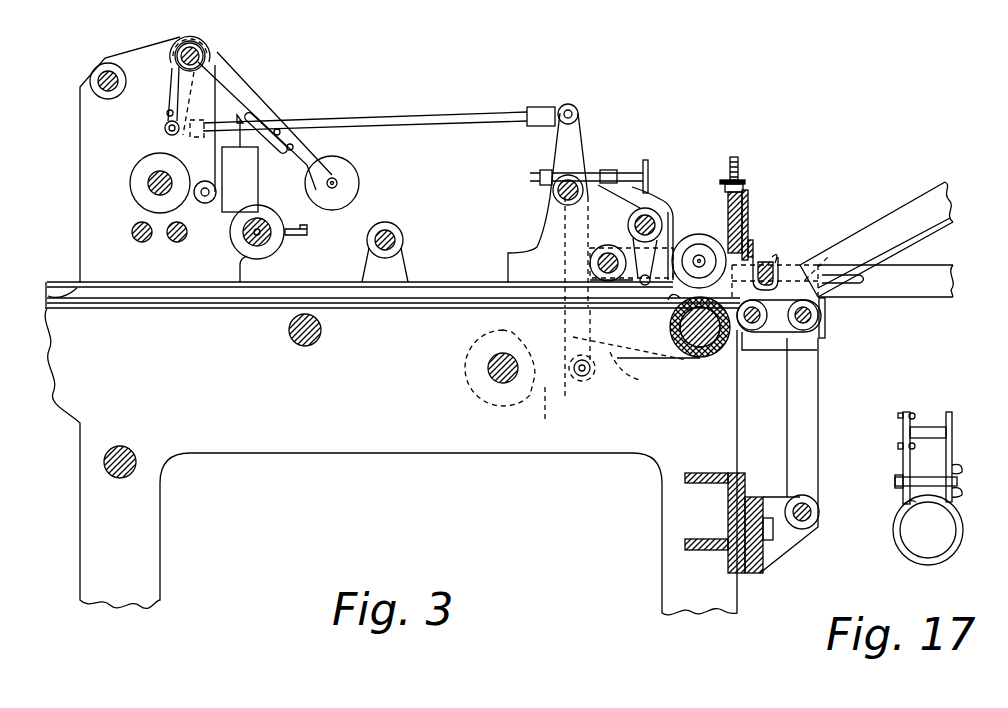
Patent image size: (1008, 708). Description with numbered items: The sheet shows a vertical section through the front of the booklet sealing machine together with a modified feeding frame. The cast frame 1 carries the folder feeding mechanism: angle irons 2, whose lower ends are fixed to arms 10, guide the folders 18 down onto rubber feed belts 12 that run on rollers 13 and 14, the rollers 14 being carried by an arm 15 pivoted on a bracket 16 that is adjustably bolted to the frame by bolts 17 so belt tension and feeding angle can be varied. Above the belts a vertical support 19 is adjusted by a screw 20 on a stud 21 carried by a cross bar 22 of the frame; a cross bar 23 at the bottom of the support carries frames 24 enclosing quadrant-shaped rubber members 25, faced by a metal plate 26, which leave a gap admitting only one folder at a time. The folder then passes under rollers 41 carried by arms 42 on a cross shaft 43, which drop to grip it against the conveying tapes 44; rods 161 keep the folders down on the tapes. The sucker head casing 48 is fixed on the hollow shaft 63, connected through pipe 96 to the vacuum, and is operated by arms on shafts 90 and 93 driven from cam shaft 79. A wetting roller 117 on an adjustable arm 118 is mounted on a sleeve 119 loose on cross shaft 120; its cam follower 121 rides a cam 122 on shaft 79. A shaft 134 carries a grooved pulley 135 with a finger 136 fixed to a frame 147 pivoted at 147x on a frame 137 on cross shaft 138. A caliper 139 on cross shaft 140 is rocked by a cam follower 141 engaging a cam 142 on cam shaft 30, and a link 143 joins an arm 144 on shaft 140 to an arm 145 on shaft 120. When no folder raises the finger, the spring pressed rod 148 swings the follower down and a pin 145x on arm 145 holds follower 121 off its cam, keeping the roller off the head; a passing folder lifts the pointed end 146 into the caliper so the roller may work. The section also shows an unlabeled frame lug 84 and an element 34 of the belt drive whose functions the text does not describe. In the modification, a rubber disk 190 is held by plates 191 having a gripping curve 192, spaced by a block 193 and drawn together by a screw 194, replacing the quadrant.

In FIG. 3, the frame 1 is at (62, 420).
In FIG. 3, the angle irons 2 is at (915, 222).
In FIG. 3, the arms 10 is at (925, 298).
In FIG. 3, the rubber feed belts 12 is at (790, 340).
In FIG. 3, the rollers 13 is at (752, 332).
In FIG. 3, the rollers 14 is at (824, 325).
In FIG. 3, the arm 15 is at (805, 406).
In FIG. 3, the bracket 16 is at (798, 533).
In FIG. 3, the bolts 17 is at (766, 555).
In FIG. 3, the folders 18 is at (864, 252).
In FIG. 3, the vertical support 19 is at (748, 235).
In FIG. 3, the adjusting screw 20 is at (745, 178).
In FIG. 3, the stud 21 is at (740, 155).
In FIG. 3, the cross bar 22 is at (726, 212).
In FIG. 3, the cross bar 23 is at (752, 242).
In FIG. 3, the frames 24 is at (756, 262).
In FIG. 3, the quadrant-shaped rubber members 25 is at (772, 258).
In FIG. 3, the metal plate 26 is at (835, 262).
In FIG. 3, the cam shaft 30 is at (490, 373).
In FIG. 3, the link 34 is at (812, 313).
In FIG. 3, the rollers 41 is at (703, 236).
In FIG. 3, the arms 42 is at (625, 238).
In FIG. 3, the cross shaft 43 is at (590, 264).
In FIG. 3, the folder conveying tapes 44 is at (224, 298).
In FIG. 3, the sucker head casing 48 is at (233, 256).
In FIG. 3, the hollow shaft 63 is at (260, 222).
In FIG. 3, the cam shaft 79 is at (150, 188).
In FIG. 3, the frame lug 84 is at (256, 350).
In FIG. 3, the transverse shaft 90 is at (141, 243).
In FIG. 3, the shaft 93 is at (188, 230).
In FIG. 3, the pipe 96 is at (291, 238).
In FIG. 3, the wetting roller 117 is at (352, 178).
In FIG. 3, the adjustable arm 118 is at (258, 107).
In FIG. 3, the sleeve 119 is at (205, 50).
In FIG. 3, the cross shaft 120 is at (208, 57).
In FIG. 3, the cam follower 121 is at (180, 97).
In FIG. 3, the cam 122 is at (158, 156).
In FIG. 3, the shaft 134 is at (716, 356).
In FIG. 3, the grooved pulley 135 is at (680, 327).
In FIG. 3, the finger 136 is at (670, 298).
In FIG. 3, the frame 137 is at (605, 248).
In FIG. 3, the cross shaft 138 is at (630, 158).
In FIG. 3, the caliper 139 is at (646, 160).
In FIG. 3, the cross shaft 140 is at (553, 198).
In FIG. 3, the cam follower 141 is at (570, 314).
In FIG. 3, the cam 142 is at (531, 415).
In FIG. 3, the link 143 is at (429, 114).
In FIG. 3, the arm 144 is at (560, 143).
In FIG. 3, the arm 145 is at (175, 48).
In FIG. 3, the pin 145x is at (165, 124).
In FIG. 3, the pointed end 146 is at (652, 182).
In FIG. 3, the frame 147 is at (605, 341).
In FIG. 3, the pivot 147x is at (637, 266).
In FIG. 3, the spring pressed rod 148 is at (638, 383).
In FIG. 3, the rods 161 is at (72, 290).
In FIG. 17, the rubber disk 190 is at (916, 552).
In FIG. 17, the plates 191 is at (903, 463).
In FIG. 17, the gripping portion 192 is at (903, 503).
In FIG. 17, the block 193 is at (926, 432).
In FIG. 17, the screw 194 is at (930, 482).